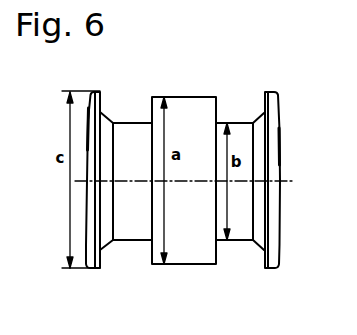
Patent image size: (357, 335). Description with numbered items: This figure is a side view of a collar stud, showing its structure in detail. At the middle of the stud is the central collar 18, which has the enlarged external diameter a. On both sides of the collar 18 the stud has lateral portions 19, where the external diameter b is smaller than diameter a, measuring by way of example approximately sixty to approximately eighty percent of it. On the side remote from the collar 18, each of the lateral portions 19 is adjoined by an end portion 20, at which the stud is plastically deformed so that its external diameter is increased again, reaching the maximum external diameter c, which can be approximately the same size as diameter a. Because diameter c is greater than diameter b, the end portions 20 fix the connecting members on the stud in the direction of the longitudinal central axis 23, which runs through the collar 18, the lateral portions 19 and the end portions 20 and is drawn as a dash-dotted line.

The central collar 18 is at (215, 264).
The lateral portions 19 is at (114, 249).
The end portions 20 is at (85, 268).
The longitudinal central axis 23 is at (287, 181).